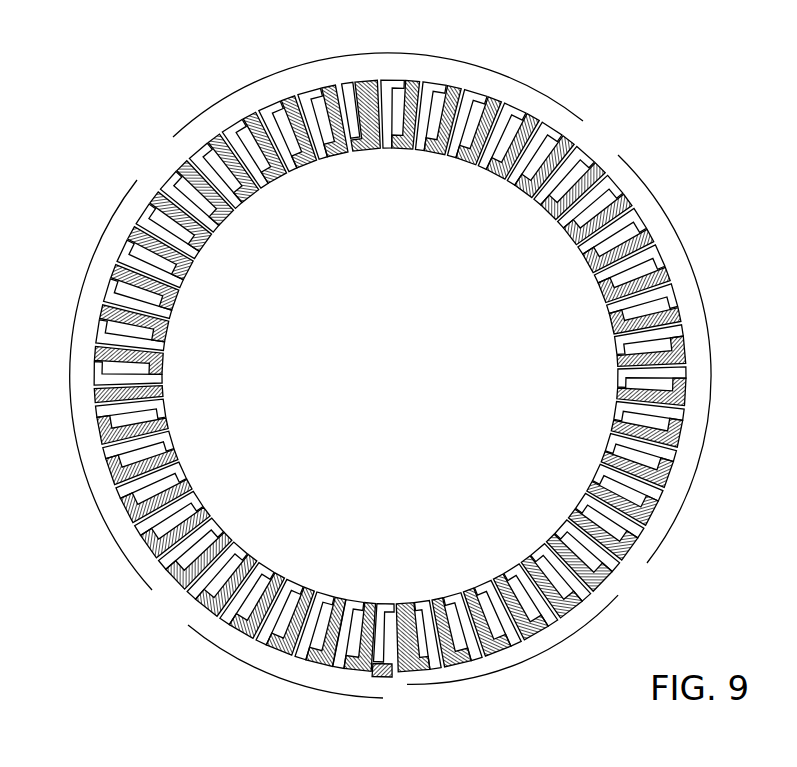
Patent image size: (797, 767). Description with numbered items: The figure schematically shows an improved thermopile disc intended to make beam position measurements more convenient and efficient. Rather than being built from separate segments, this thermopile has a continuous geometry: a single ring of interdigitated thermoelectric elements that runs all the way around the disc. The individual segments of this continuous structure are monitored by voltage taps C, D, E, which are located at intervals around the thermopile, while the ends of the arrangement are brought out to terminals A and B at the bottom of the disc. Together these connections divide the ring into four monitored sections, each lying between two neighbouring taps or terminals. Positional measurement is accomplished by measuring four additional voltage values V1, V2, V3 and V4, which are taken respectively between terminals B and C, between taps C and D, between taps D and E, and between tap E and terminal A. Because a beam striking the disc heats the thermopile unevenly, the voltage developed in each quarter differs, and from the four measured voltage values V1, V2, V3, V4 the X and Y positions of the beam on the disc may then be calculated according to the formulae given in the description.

The terminal A is at (383, 677).
The terminal B is at (407, 672).
The voltage tap C is at (686, 353).
The voltage tap D is at (367, 80).
The voltage tap E is at (94, 394).
The voltage value V1 is at (558, 514).
The voltage value V2 is at (528, 207).
The voltage value V3 is at (221, 237).
The voltage value V4 is at (235, 531).